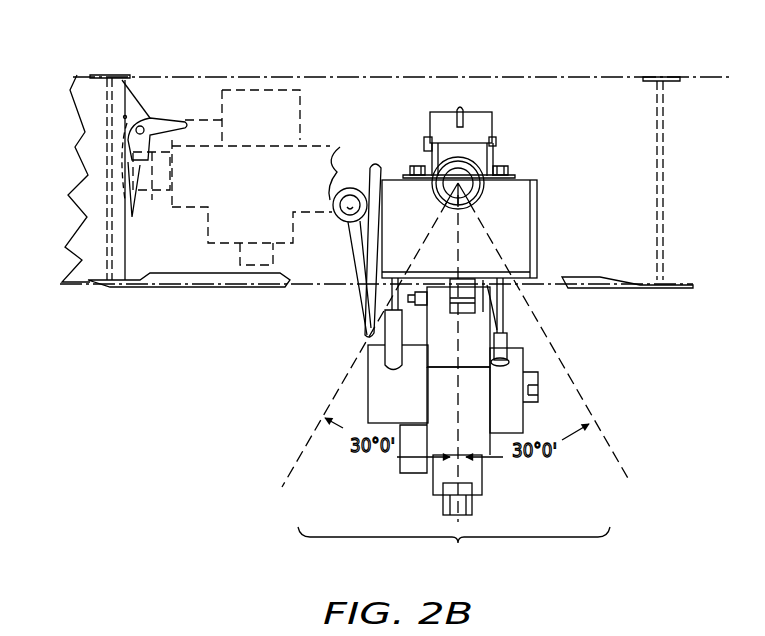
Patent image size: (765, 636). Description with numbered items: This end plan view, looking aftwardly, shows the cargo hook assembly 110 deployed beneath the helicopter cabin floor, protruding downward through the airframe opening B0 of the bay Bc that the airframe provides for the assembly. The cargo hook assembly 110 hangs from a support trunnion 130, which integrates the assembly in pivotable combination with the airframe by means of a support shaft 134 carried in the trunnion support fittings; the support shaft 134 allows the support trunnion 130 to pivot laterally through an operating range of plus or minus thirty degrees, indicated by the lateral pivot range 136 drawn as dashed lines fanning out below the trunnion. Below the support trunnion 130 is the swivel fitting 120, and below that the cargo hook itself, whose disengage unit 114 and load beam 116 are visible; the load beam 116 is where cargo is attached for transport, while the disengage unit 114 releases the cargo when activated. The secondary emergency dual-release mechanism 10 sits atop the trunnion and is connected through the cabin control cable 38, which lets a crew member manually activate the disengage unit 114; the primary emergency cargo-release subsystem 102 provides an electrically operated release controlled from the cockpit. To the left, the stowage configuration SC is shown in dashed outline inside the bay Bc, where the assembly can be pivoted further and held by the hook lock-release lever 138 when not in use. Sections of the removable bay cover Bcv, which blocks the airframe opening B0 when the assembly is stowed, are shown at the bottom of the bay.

The secondary emergency dual-release mechanism 10 is at (496, 125).
The cabin control cable 38 is at (512, 338).
The primary emergency cargo-release subsystem 102 is at (352, 302).
The cargo hook assembly 110 is at (251, 418).
The disengage unit 114 is at (416, 406).
The load beam 116 is at (447, 503).
The swivel fitting 120 is at (464, 303).
The support trunnion 130 is at (546, 238).
The support shaft 134 is at (467, 180).
The lateral pivot range 136 is at (454, 552).
The hook lock-release lever 138 is at (152, 114).
The stowage configuration SC is at (241, 85).
The bay Bc is at (352, 74).
The removable bay cover Bcv is at (678, 232).
The airframe opening B0 is at (313, 289).